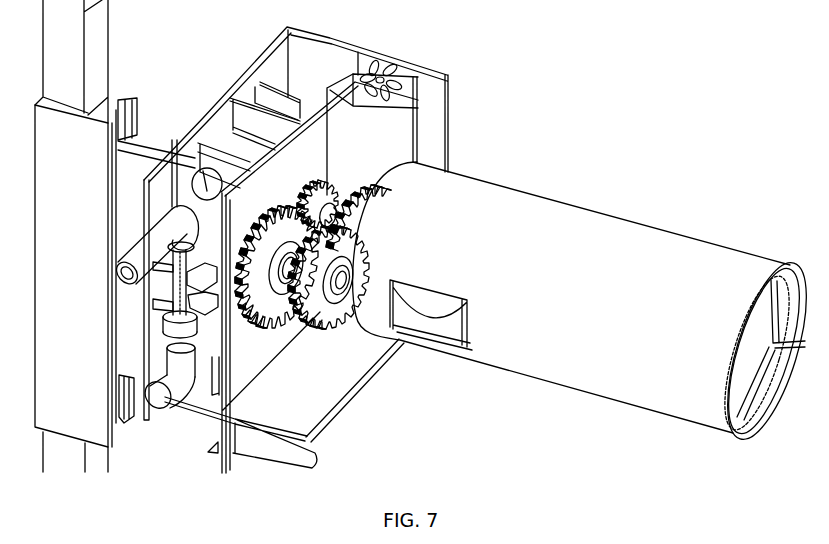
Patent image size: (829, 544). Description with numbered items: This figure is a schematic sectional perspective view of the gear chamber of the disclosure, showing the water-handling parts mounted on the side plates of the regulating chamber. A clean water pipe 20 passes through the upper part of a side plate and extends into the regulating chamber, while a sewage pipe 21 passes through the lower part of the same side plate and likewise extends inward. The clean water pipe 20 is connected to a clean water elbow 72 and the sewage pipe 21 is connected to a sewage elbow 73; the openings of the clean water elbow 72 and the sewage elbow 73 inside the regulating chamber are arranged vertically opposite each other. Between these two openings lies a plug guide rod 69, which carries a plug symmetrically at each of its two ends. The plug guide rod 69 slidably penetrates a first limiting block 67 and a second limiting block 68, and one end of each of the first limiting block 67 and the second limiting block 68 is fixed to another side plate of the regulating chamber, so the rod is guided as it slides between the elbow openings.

The clean water pipe 20 is at (143, 255).
The sewage pipe 21 is at (168, 404).
The first limiting block 67 is at (170, 243).
The second limiting block 68 is at (165, 305).
The plug guide rod 69 is at (186, 294).
The clean water elbow 72 is at (189, 206).
The sewage elbow 73 is at (193, 377).